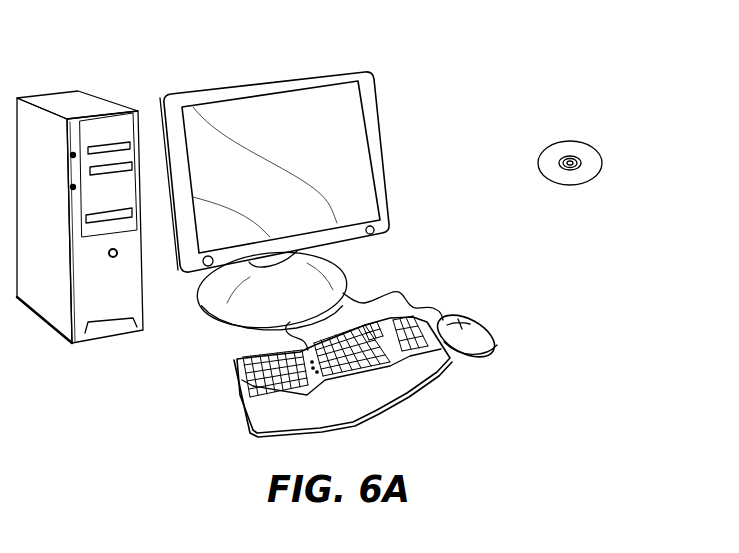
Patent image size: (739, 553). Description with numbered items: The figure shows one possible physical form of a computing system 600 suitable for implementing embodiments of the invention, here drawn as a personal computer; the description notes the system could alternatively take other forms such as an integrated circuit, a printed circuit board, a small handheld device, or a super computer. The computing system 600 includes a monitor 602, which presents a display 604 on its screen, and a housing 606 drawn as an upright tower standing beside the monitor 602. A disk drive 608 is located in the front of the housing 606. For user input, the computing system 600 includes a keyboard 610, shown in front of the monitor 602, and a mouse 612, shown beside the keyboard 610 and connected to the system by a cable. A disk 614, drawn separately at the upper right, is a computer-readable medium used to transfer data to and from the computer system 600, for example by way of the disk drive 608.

The computing system 600 is at (500, 53).
The monitor 602 is at (320, 203).
The display 604 is at (342, 110).
The housing 606 is at (104, 189).
The disk drive 608 is at (125, 212).
The keyboard 610 is at (250, 403).
The mouse 612 is at (487, 325).
The disk 614 is at (587, 138).